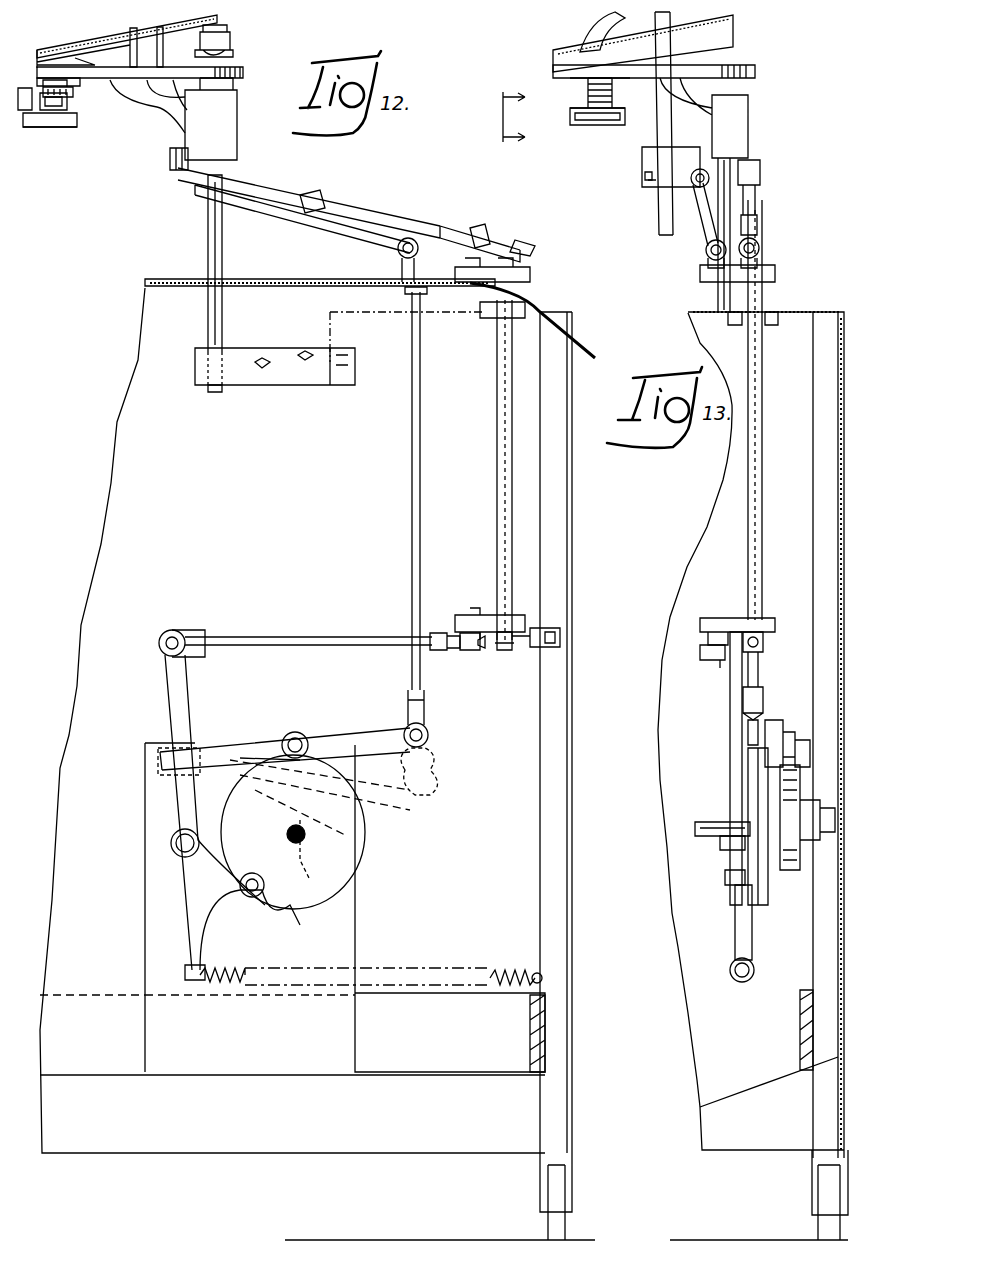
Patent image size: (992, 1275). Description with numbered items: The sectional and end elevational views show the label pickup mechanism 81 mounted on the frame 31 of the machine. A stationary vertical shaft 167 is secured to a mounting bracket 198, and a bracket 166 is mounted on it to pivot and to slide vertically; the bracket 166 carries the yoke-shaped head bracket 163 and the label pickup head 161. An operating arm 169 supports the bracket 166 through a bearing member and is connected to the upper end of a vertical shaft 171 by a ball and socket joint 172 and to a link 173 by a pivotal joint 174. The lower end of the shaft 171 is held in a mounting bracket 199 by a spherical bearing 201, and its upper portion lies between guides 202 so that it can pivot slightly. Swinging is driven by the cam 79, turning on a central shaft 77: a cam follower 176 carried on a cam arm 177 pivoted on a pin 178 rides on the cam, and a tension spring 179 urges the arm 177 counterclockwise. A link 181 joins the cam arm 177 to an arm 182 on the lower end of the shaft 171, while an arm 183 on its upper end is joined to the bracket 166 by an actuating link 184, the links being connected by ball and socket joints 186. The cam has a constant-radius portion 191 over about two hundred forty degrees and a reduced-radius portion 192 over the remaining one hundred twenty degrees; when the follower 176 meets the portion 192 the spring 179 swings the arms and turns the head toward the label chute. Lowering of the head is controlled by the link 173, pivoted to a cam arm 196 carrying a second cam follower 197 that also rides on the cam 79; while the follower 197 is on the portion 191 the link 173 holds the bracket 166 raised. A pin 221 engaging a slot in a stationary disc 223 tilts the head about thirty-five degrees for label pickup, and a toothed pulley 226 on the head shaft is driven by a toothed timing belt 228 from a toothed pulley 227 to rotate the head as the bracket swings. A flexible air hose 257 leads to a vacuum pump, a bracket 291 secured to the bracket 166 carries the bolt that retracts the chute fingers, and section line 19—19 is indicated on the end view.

In FIG. 12, the frame 31 is at (568, 575).
In FIG. 13, the frame 31 is at (825, 310).
In FIG. 12, the cam shaft 77 is at (302, 842).
In FIG. 13, the cam shaft 77 is at (700, 838).
In FIG. 12, the cam 79 is at (390, 840).
In FIG. 13, the cam 79 is at (742, 791).
In FIG. 12, the label pickup mechanism 81 is at (80, 162).
In FIG. 13, the label pickup mechanism 81 is at (602, 174).
In FIG. 12, the label pickup head 161 is at (48, 130).
In FIG. 13, the label pickup head 161 is at (577, 136).
In FIG. 12, the head bracket 163 is at (78, 85).
In FIG. 13, the head bracket 163 is at (575, 80).
In FIG. 12, the bracket 166 is at (256, 145).
In FIG. 13, the bracket 166 is at (760, 129).
In FIG. 12, the vertical shaft 167 is at (208, 246).
In FIG. 13, the vertical shaft 167 is at (718, 292).
In FIG. 12, the operating arm 169 is at (355, 205).
In FIG. 13, the operating arm 169 is at (760, 200).
In FIG. 12, the vertical shaft 171 is at (497, 437).
In FIG. 13, the vertical shaft 171 is at (755, 458).
In FIG. 12, the ball and socket joint 172 is at (525, 250).
In FIG. 13, the ball and socket joint 172 is at (758, 242).
In FIG. 12, the link 173 is at (412, 470).
In FIG. 12, the pivotal joint 174 is at (398, 250).
In FIG. 12, the cam follower 176 is at (257, 898).
In FIG. 13, the cam follower 176 is at (740, 910).
In FIG. 12, the cam arm 177 is at (180, 880).
In FIG. 12, the pin 178 is at (171, 843).
In FIG. 12, the tension spring 179 is at (230, 985).
In FIG. 13, the tension spring 179 is at (730, 980).
In FIG. 12, the link 181 is at (297, 636).
In FIG. 12, the arm 182 is at (482, 612).
In FIG. 13, the arm 182 is at (737, 761).
In FIG. 12, the arm 183 is at (532, 274).
In FIG. 13, the arm 183 is at (700, 275).
In FIG. 12, the actuating link 184 is at (290, 208).
In FIG. 13, the actuating link 184 is at (690, 198).
In FIG. 12, the ball and socket joints 186 is at (172, 172).
In FIG. 12, the constant radius portion 191 is at (370, 855).
In FIG. 12, the reduced radius portion 192 is at (295, 912).
In FIG. 12, the cam arm 196 is at (348, 725).
In FIG. 13, the cam arm 196 is at (755, 758).
In FIG. 12, the cam follower 197 is at (290, 732).
In FIG. 13, the cam follower 197 is at (772, 720).
In FIG. 12, the mounting bracket 198 is at (286, 388).
In FIG. 12, the mounting bracket 199 is at (545, 650).
In FIG. 12, the spherical bearing 201 is at (505, 652).
In FIG. 12, the guides 202 is at (482, 320).
In FIG. 13, the guides 202 is at (778, 322).
In FIG. 12, the pin 221 is at (215, 45).
In FIG. 13, the pin 221 is at (643, 43).
In FIG. 12, the disc 223 is at (230, 30).
In FIG. 12, the toothed pulley 226 is at (45, 58).
In FIG. 13, the toothed pulley 226 is at (560, 72).
In FIG. 12, the toothed pulley 227 is at (240, 72).
In FIG. 13, the toothed pulley 227 is at (755, 68).
In FIG. 12, the toothed timing belt 228 is at (138, 120).
In FIG. 13, the toothed timing belt 228 is at (657, 112).
In FIG. 13, the flexible air hose 257 is at (636, 176).
In FIG. 13, the bracket 291 is at (642, 152).
In FIG. 13, the section line 19- 19 is at (492, 119).